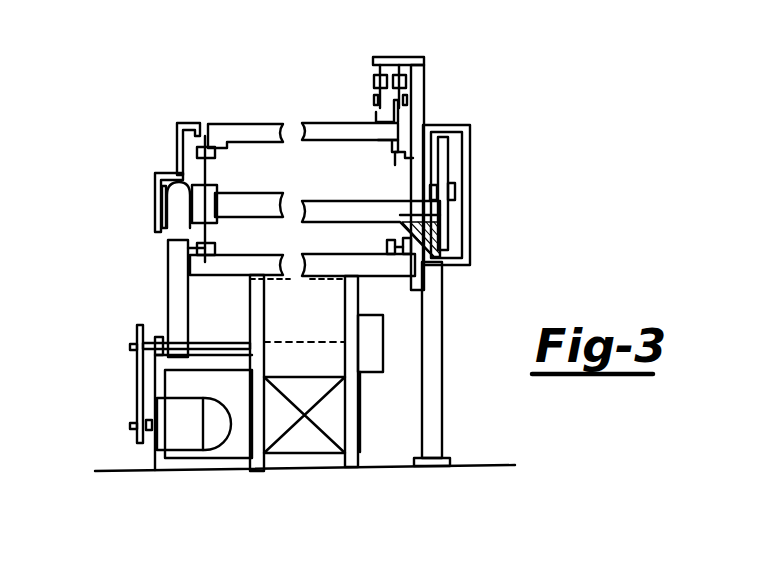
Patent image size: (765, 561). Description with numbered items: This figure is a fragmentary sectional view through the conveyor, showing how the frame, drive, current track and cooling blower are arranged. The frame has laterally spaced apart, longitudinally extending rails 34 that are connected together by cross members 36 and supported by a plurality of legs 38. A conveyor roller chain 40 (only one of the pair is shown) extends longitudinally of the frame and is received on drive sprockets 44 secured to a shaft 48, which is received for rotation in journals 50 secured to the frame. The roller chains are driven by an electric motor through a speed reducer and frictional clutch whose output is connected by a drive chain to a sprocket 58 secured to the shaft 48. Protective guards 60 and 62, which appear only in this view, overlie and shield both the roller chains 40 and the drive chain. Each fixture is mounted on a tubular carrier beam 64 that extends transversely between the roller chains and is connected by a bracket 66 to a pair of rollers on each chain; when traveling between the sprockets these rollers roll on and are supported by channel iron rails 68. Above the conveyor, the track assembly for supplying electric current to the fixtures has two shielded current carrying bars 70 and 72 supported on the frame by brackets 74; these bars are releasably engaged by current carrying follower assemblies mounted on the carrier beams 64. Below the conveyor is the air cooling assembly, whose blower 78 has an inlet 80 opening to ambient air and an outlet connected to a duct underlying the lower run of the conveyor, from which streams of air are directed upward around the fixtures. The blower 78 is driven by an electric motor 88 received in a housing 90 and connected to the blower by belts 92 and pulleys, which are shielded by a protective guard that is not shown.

The rails 34 is at (170, 238).
The cross members 36 is at (445, 272).
The legs 38 is at (443, 345).
The conveyor roller chains 40 is at (197, 134).
The drive sprockets 44 is at (210, 236).
The shaft 48 is at (276, 160).
The journals 50 is at (164, 204).
The sprocket 58 is at (450, 166).
The protective guard 60 is at (158, 172).
The protective guard 62 is at (468, 130).
The tubular carrier beam 64 is at (247, 92).
The bracket 66 is at (374, 144).
The channel iron rails 68 is at (382, 90).
The current carrying bar 70 is at (378, 70).
The current carrying bar 72 is at (399, 66).
The brackets 74 is at (425, 106).
The blower 78 is at (366, 297).
The inlet 80 is at (384, 358).
The electric motor 88 is at (188, 440).
The housing 90 is at (155, 456).
The belts 92 is at (136, 363).